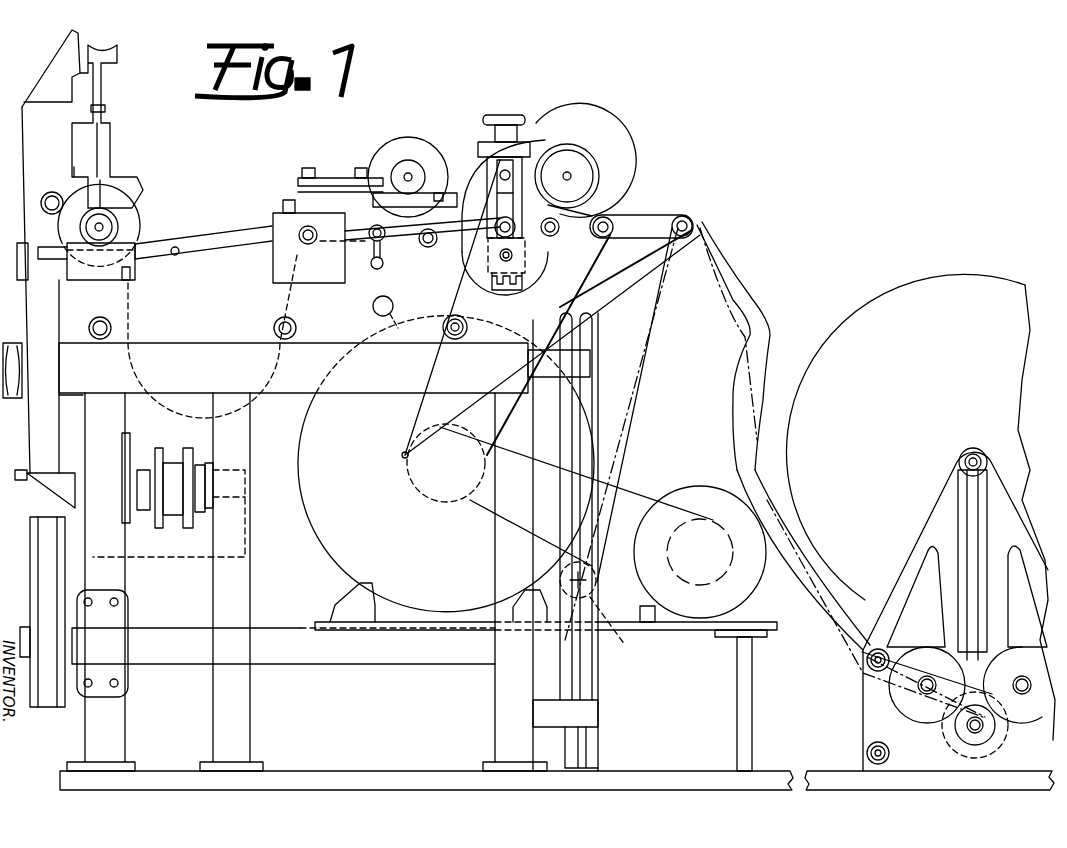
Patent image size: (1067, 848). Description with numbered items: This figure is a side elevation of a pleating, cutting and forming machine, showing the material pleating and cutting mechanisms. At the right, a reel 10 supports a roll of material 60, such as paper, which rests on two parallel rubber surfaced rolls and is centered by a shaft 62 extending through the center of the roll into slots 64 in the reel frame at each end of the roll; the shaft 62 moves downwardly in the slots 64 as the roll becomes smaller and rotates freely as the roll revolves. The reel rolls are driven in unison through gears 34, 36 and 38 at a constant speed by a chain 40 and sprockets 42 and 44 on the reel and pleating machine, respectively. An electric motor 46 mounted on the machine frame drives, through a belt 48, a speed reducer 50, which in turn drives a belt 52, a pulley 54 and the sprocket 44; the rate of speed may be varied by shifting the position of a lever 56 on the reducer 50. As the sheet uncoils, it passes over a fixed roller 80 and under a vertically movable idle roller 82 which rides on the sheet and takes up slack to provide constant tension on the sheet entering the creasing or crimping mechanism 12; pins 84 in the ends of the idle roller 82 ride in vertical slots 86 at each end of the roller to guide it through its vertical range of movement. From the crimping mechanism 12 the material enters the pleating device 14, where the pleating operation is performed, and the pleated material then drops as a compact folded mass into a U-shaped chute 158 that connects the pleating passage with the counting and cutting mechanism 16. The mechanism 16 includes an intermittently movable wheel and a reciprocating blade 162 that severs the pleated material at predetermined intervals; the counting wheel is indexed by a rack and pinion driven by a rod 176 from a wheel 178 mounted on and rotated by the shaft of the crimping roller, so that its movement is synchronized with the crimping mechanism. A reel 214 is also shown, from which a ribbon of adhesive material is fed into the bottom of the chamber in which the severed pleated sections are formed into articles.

The reel 10 is at (960, 278).
The creasing or crimping mechanism 12 is at (465, 212).
The pleating device 14 is at (342, 172).
The counting and cutting mechanism 16 is at (141, 176).
The gear 34 is at (958, 748).
The gear 36 is at (912, 715).
The gear 38 is at (1020, 710).
The chain 40 is at (820, 612).
The sprocket 42 is at (996, 735).
The sprocket 44 is at (590, 158).
The electric motor 46 is at (731, 492).
The belt 48 is at (630, 498).
The speed reducer 50 is at (330, 537).
The belt 52 is at (432, 412).
The pulley 54 is at (583, 112).
The lever 56 is at (372, 307).
The roll of material 60 is at (878, 308).
The shaft 62 is at (967, 454).
The slots 64 is at (972, 556).
The fixed roller 80 is at (697, 223).
The idle roller 82 is at (614, 632).
The pins 84 is at (594, 579).
The vertical slots 86 is at (582, 680).
The U-shaped chute 158 is at (140, 380).
The reciprocating blade 162 is at (95, 198).
The rod 176 is at (205, 250).
The wheel 178 is at (497, 292).
The reel 214 is at (47, 708).